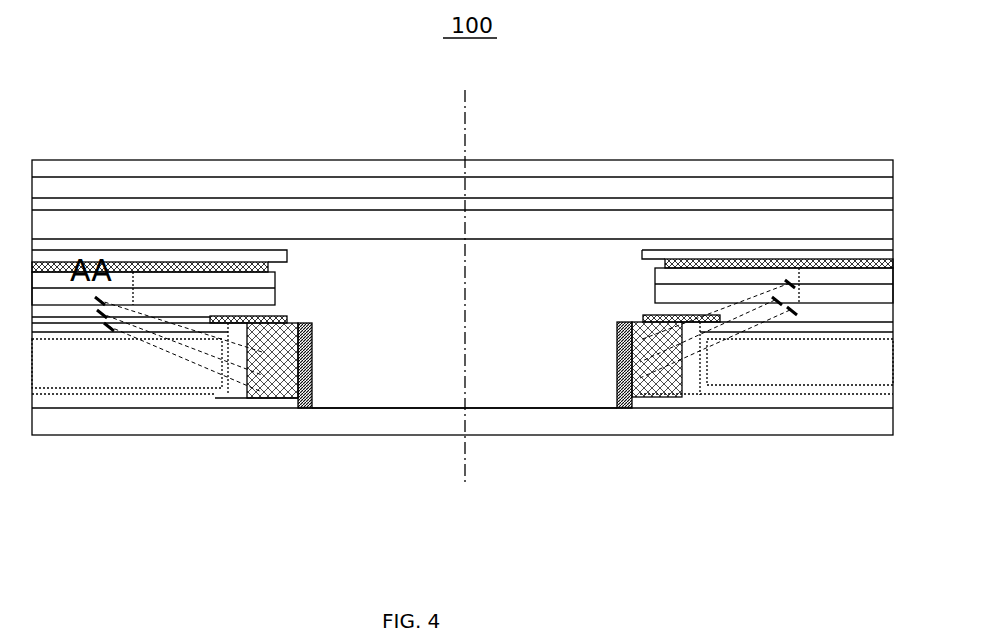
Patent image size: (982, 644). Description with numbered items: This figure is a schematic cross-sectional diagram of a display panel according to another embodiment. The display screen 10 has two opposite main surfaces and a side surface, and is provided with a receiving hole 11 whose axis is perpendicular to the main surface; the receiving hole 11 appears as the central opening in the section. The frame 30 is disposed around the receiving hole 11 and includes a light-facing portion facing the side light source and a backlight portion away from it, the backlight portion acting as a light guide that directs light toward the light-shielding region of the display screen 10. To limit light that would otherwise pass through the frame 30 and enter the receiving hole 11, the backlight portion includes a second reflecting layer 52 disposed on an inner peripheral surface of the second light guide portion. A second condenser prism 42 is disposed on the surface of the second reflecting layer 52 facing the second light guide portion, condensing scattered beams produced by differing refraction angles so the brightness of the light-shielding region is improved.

The display screen 10 is at (725, 163).
The receiving hole 11 is at (503, 388).
The frame 30 is at (261, 390).
The second reflecting layer 52 is at (306, 408).
The second condenser prism 42 is at (635, 393).